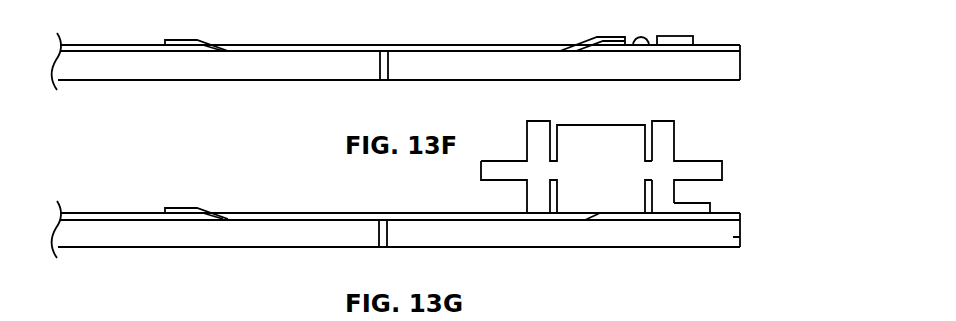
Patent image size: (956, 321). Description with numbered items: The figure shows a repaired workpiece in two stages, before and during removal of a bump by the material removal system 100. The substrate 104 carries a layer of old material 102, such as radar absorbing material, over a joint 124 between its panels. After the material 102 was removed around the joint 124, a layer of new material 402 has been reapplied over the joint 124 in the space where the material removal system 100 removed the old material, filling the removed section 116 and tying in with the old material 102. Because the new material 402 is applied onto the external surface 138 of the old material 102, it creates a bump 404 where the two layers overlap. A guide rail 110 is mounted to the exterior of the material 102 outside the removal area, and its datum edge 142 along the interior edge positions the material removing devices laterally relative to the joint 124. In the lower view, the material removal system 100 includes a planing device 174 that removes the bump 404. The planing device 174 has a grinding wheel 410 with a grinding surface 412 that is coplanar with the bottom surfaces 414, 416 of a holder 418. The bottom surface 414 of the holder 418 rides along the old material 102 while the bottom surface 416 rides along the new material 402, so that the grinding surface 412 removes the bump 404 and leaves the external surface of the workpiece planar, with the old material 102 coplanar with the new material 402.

In FIG. 13G, the material removal system 100 is at (730, 131).
In FIG. 13G, the material 102 is at (738, 216).
In FIG. 13G, the substrate 104 is at (735, 237).
In FIG. 13F, the guide rail 110 is at (683, 35).
In FIG. 13G, the guide rail 110 is at (702, 202).
In FIG. 13F, the section 116 is at (596, 11).
In FIG. 13F, the joint 124 is at (382, 84).
In FIG. 13G, the joint 124 is at (382, 252).
In FIG. 13F, the external surface 138 is at (649, 46).
In FIG. 13F, the datum edge 142 is at (651, 40).
In FIG. 13G, the planing device 174 is at (682, 122).
In FIG. 13F, the new material 402 is at (452, 50).
In FIG. 13G, the new material 402 is at (426, 213).
In FIG. 13F, the bump 404 is at (607, 36).
In FIG. 13G, the grinding wheel 410 is at (600, 130).
In FIG. 13G, the grinding surface 412 is at (628, 213).
In FIG. 13G, the bottom surface 414 is at (662, 213).
In FIG. 13G, the bottom surface 416 is at (540, 213).
In FIG. 13G, the holder 418 is at (668, 137).